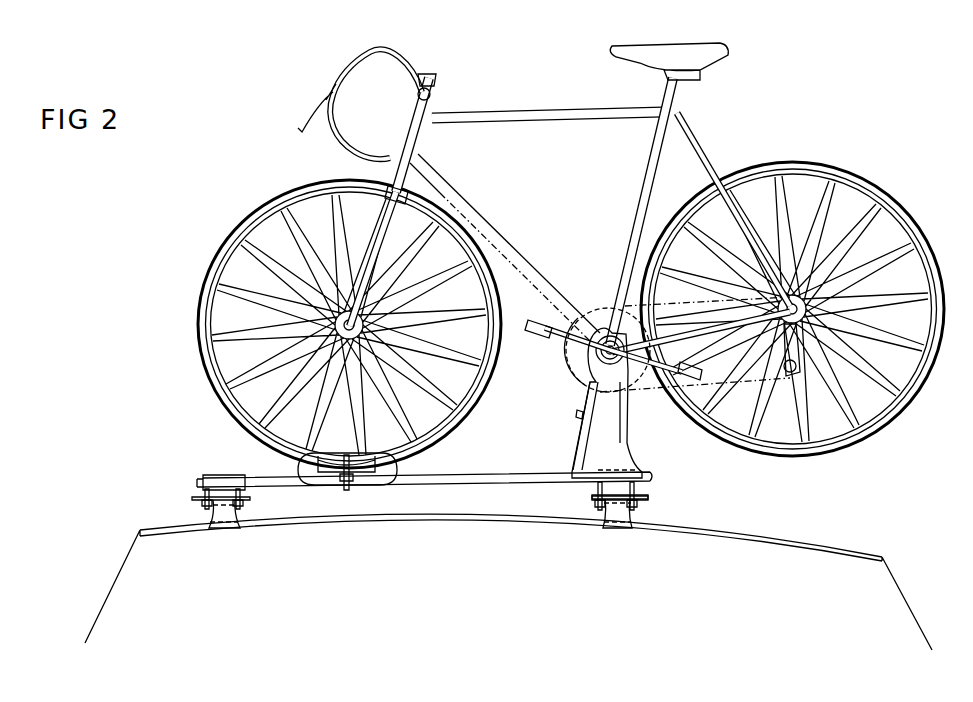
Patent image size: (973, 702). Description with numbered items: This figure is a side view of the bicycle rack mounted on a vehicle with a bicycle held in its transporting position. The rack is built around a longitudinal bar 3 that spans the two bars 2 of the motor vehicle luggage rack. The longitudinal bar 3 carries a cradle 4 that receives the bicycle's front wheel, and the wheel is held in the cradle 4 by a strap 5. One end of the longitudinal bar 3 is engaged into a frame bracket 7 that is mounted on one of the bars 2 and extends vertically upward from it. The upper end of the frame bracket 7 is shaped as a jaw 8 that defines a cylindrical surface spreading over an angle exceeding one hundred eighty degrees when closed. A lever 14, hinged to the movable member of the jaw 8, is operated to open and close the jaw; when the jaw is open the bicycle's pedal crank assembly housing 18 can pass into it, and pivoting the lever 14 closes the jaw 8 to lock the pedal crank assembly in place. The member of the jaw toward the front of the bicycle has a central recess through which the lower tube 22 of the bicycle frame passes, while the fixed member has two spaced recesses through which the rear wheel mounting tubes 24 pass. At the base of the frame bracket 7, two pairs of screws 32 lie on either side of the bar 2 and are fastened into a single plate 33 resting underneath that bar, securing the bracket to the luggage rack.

The bar of the luggage rack 2 is at (223, 490).
The longitudinal bar 3 is at (495, 482).
The cradle 4 is at (327, 479).
The strap 5 is at (348, 492).
The frame bracket 7 is at (629, 439).
The jaw 8 is at (578, 354).
The lever 14 is at (589, 426).
The pedal crank assembly housing 18 is at (588, 306).
The lower tube 22 is at (528, 258).
The rear wheel mounting tubes 24 is at (717, 323).
The screws 32 is at (640, 508).
The plate 33 is at (593, 497).